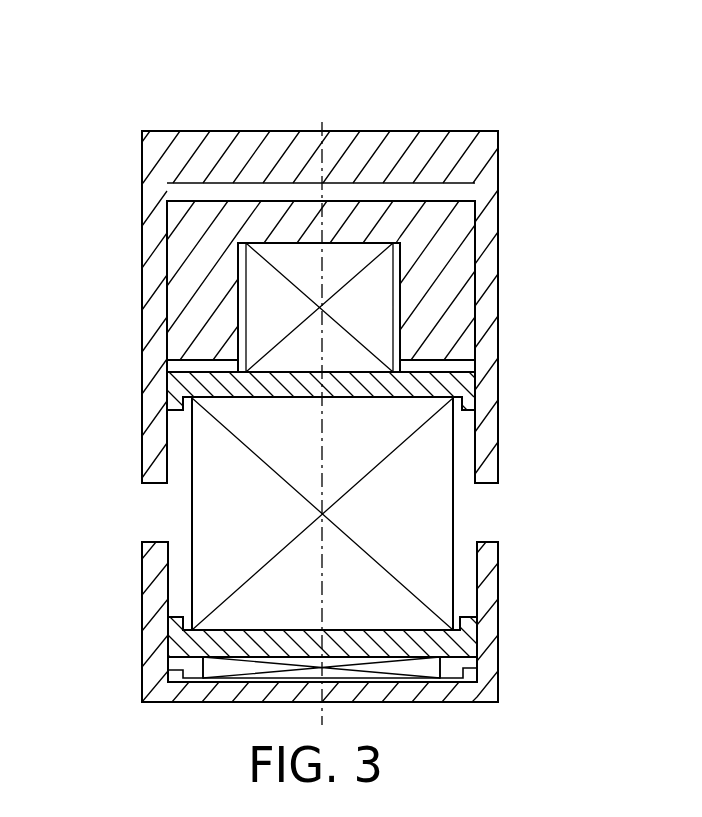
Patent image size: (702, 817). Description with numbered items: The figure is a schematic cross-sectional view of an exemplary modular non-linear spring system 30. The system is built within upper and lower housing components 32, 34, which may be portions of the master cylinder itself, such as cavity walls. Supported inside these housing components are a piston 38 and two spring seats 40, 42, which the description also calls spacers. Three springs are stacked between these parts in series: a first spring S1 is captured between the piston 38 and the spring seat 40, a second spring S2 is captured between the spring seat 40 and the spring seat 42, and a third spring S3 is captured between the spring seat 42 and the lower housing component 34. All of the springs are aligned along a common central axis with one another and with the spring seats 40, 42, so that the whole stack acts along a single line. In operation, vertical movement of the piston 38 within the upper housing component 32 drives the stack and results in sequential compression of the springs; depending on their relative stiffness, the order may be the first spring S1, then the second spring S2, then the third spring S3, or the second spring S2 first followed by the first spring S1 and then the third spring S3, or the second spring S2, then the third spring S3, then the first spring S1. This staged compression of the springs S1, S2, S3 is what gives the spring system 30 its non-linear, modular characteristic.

The modular non-linear spring system 30 is at (130, 96).
The upper housing component 32 is at (150, 180).
The lower housing component 34 is at (155, 610).
The piston 38 is at (458, 242).
The spring seat 40 is at (458, 386).
The spring seat 42 is at (480, 636).
The first spring S1 is at (242, 295).
The second spring S2 is at (190, 512).
The third spring S3 is at (200, 672).